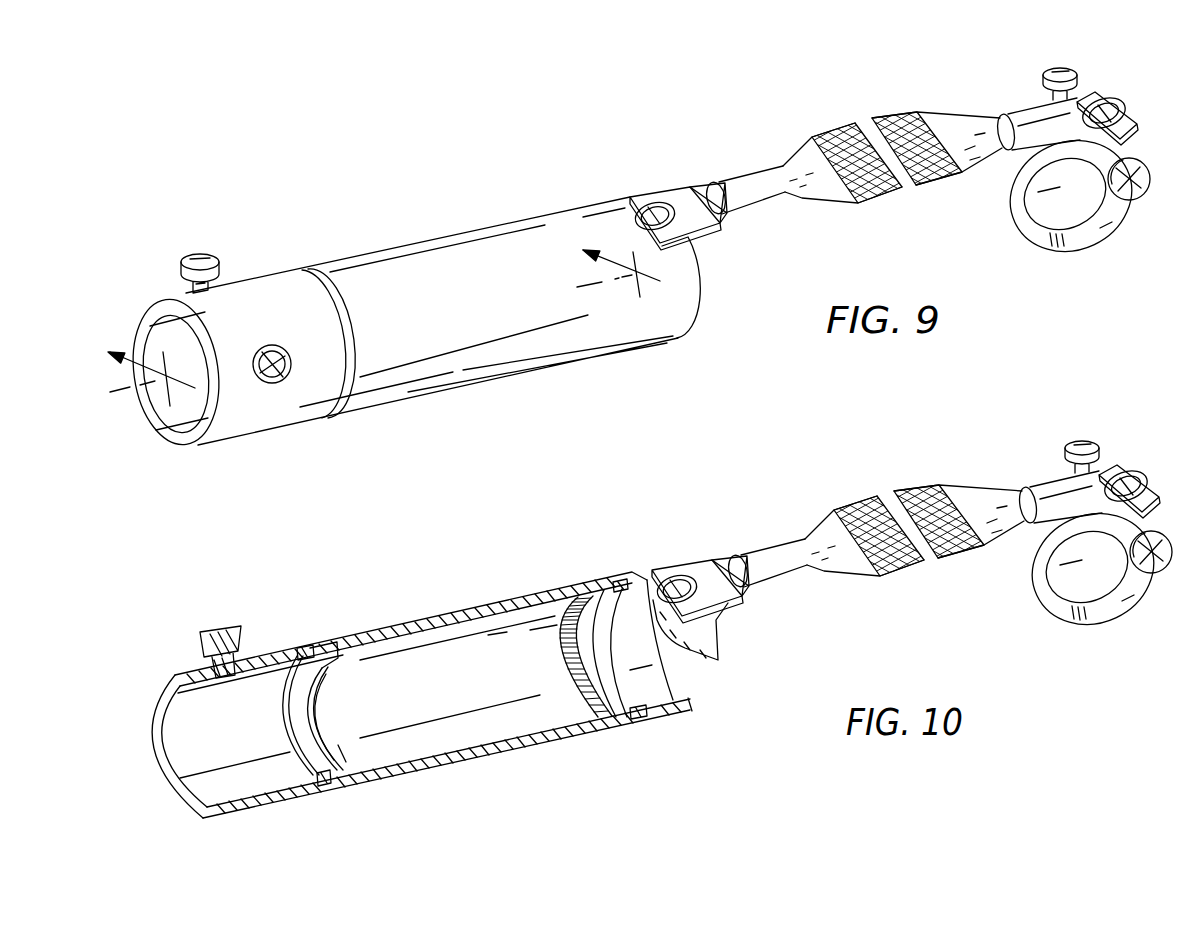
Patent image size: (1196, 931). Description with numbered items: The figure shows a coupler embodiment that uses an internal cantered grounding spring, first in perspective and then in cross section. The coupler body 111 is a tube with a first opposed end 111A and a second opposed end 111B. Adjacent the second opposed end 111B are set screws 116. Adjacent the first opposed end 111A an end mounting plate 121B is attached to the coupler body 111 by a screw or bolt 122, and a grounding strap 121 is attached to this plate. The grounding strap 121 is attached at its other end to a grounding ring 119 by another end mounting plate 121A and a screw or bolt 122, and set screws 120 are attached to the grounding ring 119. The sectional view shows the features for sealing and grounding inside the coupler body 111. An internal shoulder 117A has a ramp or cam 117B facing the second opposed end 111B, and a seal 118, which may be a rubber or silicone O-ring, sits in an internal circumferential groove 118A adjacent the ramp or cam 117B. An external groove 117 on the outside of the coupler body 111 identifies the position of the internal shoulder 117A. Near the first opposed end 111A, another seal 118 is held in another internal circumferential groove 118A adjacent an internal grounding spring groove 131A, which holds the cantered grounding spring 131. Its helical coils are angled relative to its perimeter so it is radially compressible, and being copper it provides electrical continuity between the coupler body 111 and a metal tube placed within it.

In FIG. 9, the coupler body 111 is at (489, 216).
In FIG. 10, the coupler body 111 is at (438, 612).
In FIG. 9, the first opposed end 111A is at (696, 297).
In FIG. 10, the first opposed end 111A is at (681, 697).
In FIG. 9, the second opposed end 111B is at (199, 442).
In FIG. 10, the second opposed end 111B is at (183, 808).
In FIG. 9, the set screws 116 is at (221, 260).
In FIG. 10, the set screws 116 is at (240, 628).
In FIG. 9, the external groove 117 is at (304, 268).
In FIG. 10, the external groove 117 is at (358, 781).
In FIG. 10, the internal shoulder 117A is at (334, 724).
In FIG. 10, the ramp or cam 117B is at (346, 762).
In FIG. 10, the seal 118 is at (321, 786).
In FIG. 10, the internal circumferential groove 118A is at (297, 648).
In FIG. 9, the grounding ring 119 is at (1101, 233).
In FIG. 10, the grounding ring 119 is at (1117, 614).
In FIG. 9, the set screws 120 is at (1043, 77).
In FIG. 10, the set screws 120 is at (1060, 453).
In FIG. 9, the grounding strap 121 is at (856, 128).
In FIG. 10, the grounding strap 121 is at (898, 498).
In FIG. 9, the end mounting plate 121A is at (1138, 136).
In FIG. 10, the end mounting plate 121A is at (1157, 481).
In FIG. 9, the end mounting plate 121B is at (703, 226).
In FIG. 10, the end mounting plate 121B is at (721, 606).
In FIG. 9, the screw or bolt 122 is at (660, 206).
In FIG. 10, the screw or bolt 122 is at (683, 568).
In FIG. 10, the cantered grounding spring 131 is at (573, 648).
In FIG. 10, the internal grounding spring groove 131A is at (598, 731).